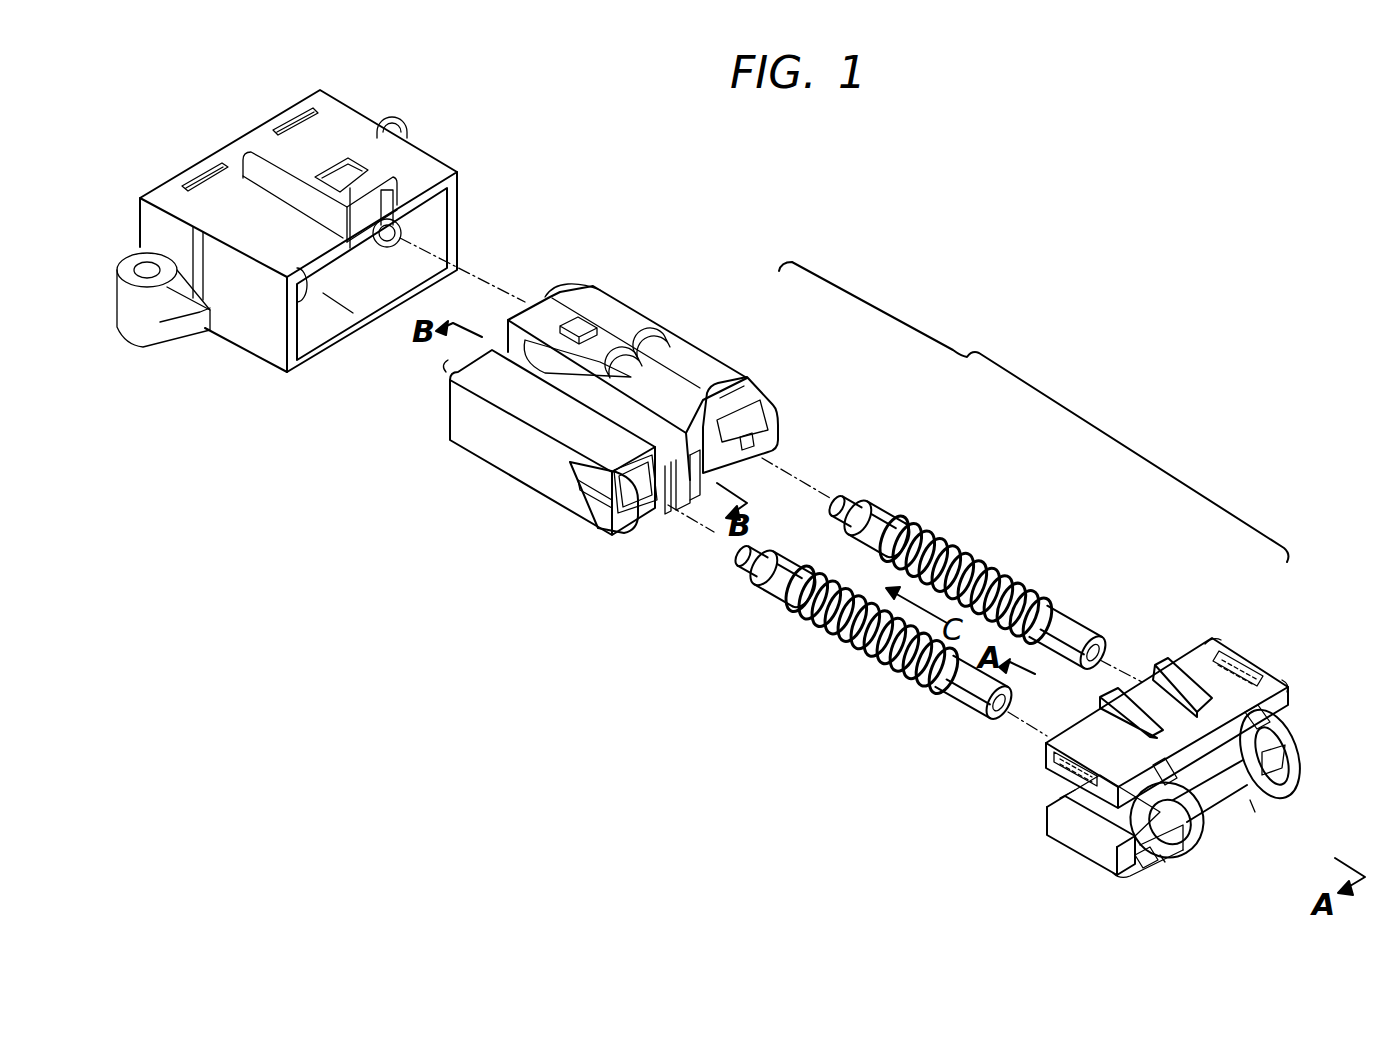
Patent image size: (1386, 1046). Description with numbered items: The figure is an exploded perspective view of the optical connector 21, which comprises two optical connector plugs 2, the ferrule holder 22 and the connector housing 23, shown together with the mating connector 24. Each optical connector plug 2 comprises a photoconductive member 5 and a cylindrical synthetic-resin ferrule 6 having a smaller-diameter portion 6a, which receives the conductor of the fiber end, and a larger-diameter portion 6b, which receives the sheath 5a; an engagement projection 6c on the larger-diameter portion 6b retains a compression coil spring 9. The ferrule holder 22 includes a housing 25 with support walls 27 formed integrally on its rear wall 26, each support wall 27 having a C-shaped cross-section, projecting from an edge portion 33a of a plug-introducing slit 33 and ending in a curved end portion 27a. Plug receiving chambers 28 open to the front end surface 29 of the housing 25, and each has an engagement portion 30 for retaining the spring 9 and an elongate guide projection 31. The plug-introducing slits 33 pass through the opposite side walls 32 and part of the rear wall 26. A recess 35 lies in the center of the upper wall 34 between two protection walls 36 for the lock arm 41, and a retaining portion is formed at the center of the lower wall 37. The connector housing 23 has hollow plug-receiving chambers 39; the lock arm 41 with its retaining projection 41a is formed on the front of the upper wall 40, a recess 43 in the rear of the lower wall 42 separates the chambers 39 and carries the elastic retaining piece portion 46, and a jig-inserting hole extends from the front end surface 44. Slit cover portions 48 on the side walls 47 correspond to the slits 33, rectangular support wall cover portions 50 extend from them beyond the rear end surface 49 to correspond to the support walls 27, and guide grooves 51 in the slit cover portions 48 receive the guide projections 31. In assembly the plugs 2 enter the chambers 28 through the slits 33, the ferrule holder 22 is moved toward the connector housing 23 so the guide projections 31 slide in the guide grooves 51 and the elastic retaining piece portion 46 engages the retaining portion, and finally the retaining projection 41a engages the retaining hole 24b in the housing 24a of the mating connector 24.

The optical connector plug 2 is at (910, 508).
The photoconductive member 5 is at (1105, 610).
The sheath 5a is at (1060, 617).
The ferrule 6 is at (870, 546).
The smaller-diameter portion 6a is at (848, 507).
The larger-diameter portion 6b is at (878, 515).
The engagement projection 6c is at (920, 520).
The compression coil spring 9 is at (985, 565).
The optical connector 21 is at (1033, 412).
The ferrule holder 22 is at (1233, 636).
The connector housing 23 is at (717, 330).
The mating connector 24 is at (370, 92).
The housing 24a is at (445, 182).
The retaining hole 24b is at (372, 160).
The housing 25 is at (1270, 652).
The rear wall 26 is at (1290, 690).
The support wall 27 is at (1290, 795).
The end portion 27a is at (1255, 805).
The plug receiving chamber 28 is at (1190, 640).
The front end surface 29 is at (1060, 735).
The engagement portion 30 is at (1285, 745).
The elongate guide projection 31 is at (1240, 655).
The side wall 32 is at (1285, 665).
The plug-introducing slit 33 is at (1275, 712).
The edge portion 33a is at (1290, 770).
The upper wall 34 is at (1185, 840).
The recess 35 is at (1158, 670).
The protection wall 36 is at (1165, 660).
The lower wall 37 is at (1047, 812).
The plug-receiving chamber 39 is at (730, 385).
The upper wall 40 is at (452, 433).
The lock arm 41 is at (552, 292).
The retaining projection 41a is at (585, 318).
The lower wall 42 is at (684, 478).
The recess 43 is at (683, 515).
The front end surface 44 is at (446, 372).
The elastic retaining piece portion 46 is at (690, 505).
The side wall 47 is at (676, 340).
The slit cover portion 48 is at (768, 392).
The rear end surface 49 is at (756, 442).
The support wall cover portion 50 is at (780, 408).
The guide groove 51 is at (760, 380).